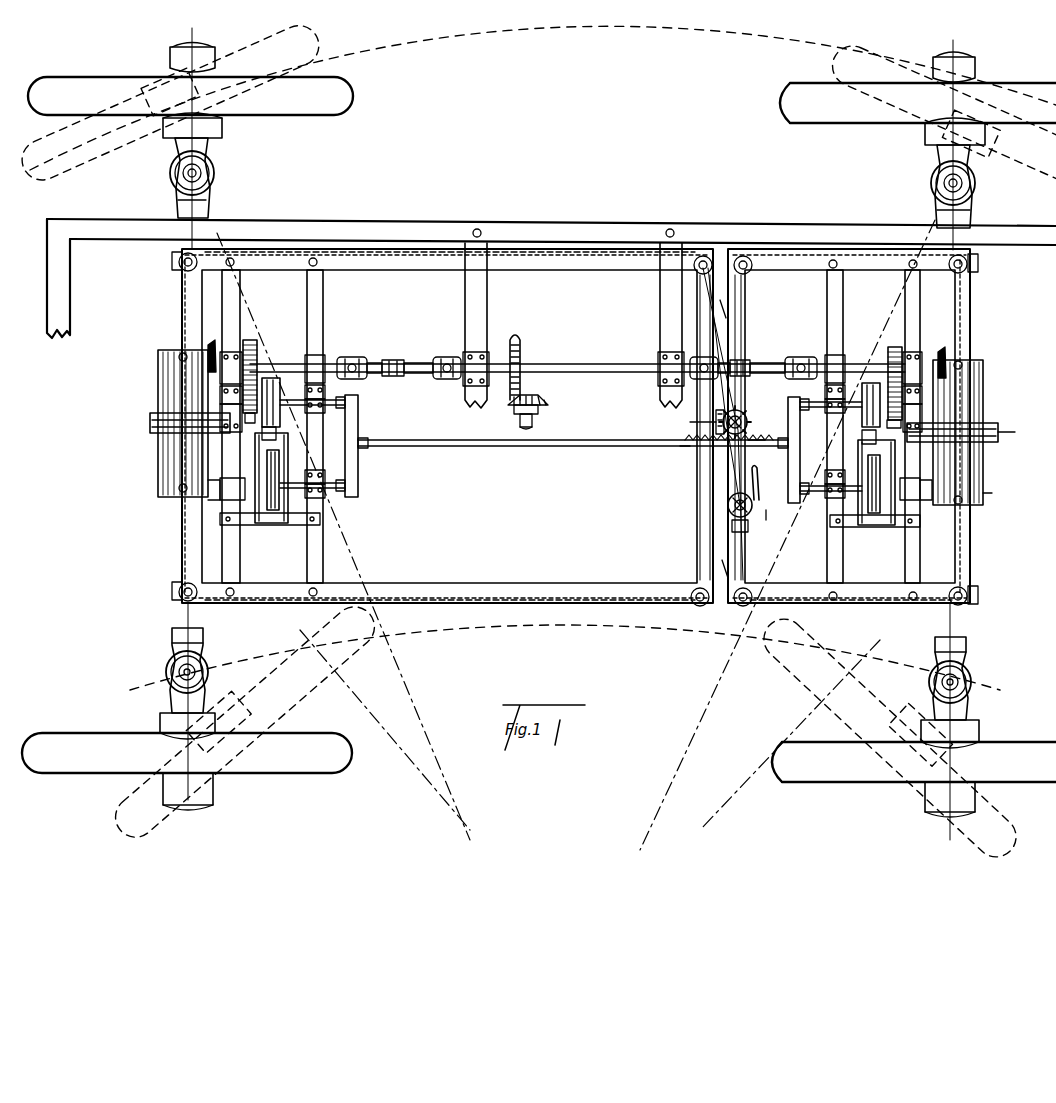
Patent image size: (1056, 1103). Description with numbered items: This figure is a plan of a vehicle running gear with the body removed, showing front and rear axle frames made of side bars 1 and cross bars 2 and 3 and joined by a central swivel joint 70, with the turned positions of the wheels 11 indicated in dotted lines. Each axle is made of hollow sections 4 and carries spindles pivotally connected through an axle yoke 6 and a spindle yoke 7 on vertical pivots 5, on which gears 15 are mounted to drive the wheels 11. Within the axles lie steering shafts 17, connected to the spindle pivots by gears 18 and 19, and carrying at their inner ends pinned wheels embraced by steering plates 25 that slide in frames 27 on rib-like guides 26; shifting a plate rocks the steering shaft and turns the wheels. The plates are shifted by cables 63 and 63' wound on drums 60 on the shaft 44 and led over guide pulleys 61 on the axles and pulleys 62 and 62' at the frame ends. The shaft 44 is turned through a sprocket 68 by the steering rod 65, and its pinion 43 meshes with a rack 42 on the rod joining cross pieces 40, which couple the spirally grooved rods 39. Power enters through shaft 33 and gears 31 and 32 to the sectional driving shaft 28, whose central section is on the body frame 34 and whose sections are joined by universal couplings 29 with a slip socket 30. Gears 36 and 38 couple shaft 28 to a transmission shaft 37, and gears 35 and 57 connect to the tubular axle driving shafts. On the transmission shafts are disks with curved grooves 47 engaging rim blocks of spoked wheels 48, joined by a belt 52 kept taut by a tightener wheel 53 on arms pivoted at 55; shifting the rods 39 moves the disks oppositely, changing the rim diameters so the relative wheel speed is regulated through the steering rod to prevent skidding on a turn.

The side bars 1 is at (551, 402).
The cross bars 2 is at (165, 31).
The cross bars 3 is at (740, 336).
The hollow sections 4 is at (182, 293).
The pivots 5 is at (214, 176).
The yoke 6 is at (163, 321).
The yoke 7 is at (1018, 428).
The wheels 11 is at (925, 122).
The gears 15 is at (212, 168).
The steering shafts 17 is at (810, 418).
The gears 18 is at (770, 500).
The gears 19 is at (690, 422).
The steering plates 25 is at (172, 467).
The rib-like guides 26 is at (985, 495).
The frames 27 is at (150, 427).
The driving shaft 28 is at (290, 370).
The universal couplings 29 is at (355, 356).
The socket 30 is at (400, 364).
The gear 31 is at (545, 403).
The gear 32 is at (522, 360).
The shaft 33 is at (536, 418).
The body frame 34 is at (540, 228).
The gear 35 is at (212, 345).
The gear 36 is at (252, 345).
The transmission shaft 37 is at (570, 487).
The gear 38 is at (570, 427).
The rods 39 is at (305, 400).
The cross pieces 40 is at (359, 420).
The rack 42 is at (700, 440).
The pinion 43 is at (745, 410).
The shaft 44 is at (755, 448).
The grooves 47 is at (500, 448).
The wheels 48 is at (272, 380).
The belt 52 is at (278, 454).
The wheel 53 is at (272, 430).
The pivot 55 is at (570, 530).
The gear 57 is at (220, 498).
The drums 60 is at (711, 416).
The guide pulleys 61 is at (176, 259).
The guide pulleys 62 is at (754, 417).
The guide pulleys 62' is at (703, 421).
The cables 63 is at (851, 615).
The cables 63' is at (450, 419).
The steering rod 65 is at (750, 515).
The sprocket 68 is at (752, 468).
The swivel joint 70 is at (680, 445).